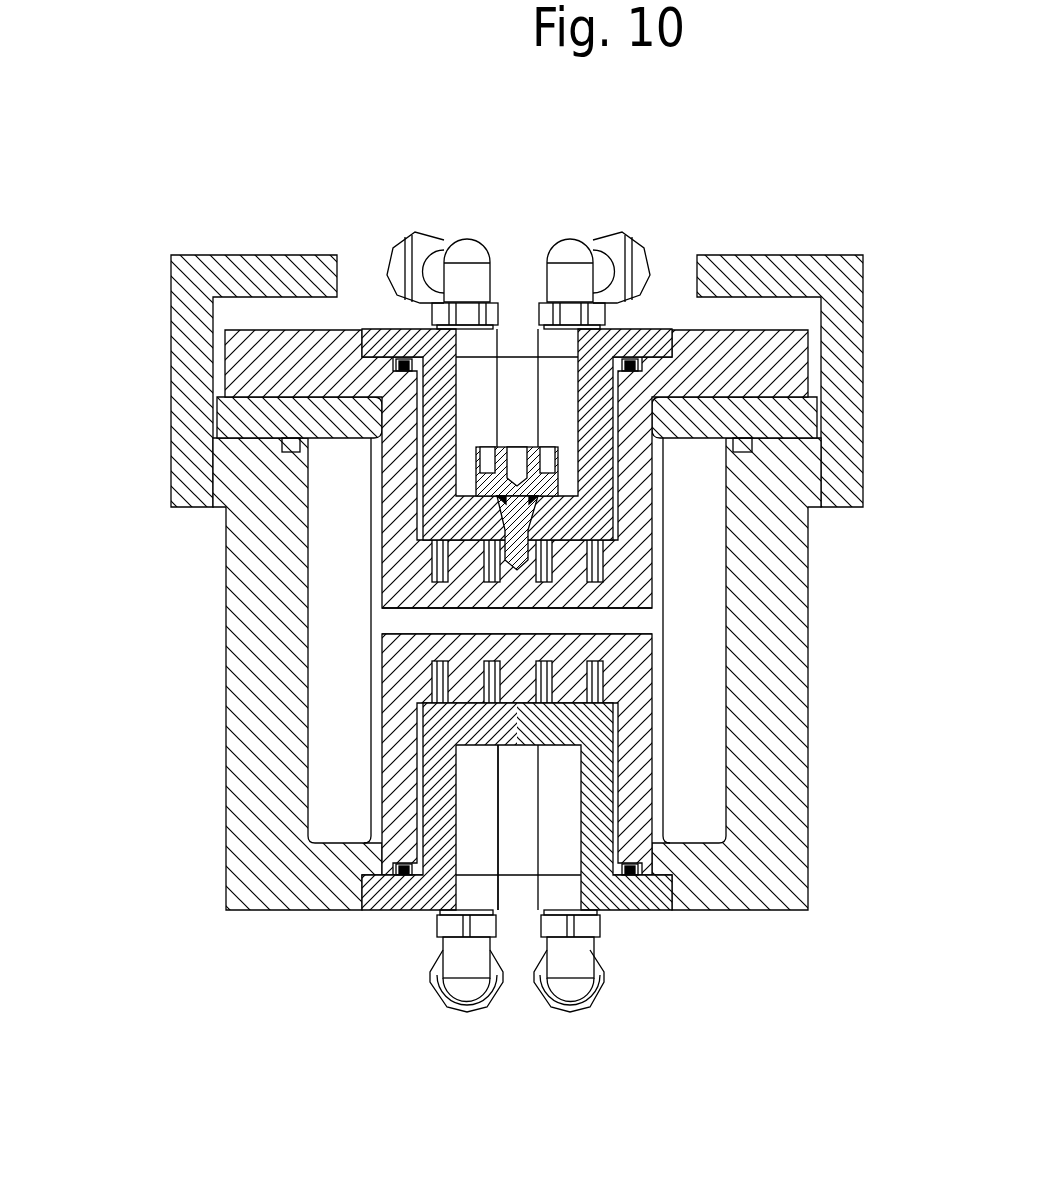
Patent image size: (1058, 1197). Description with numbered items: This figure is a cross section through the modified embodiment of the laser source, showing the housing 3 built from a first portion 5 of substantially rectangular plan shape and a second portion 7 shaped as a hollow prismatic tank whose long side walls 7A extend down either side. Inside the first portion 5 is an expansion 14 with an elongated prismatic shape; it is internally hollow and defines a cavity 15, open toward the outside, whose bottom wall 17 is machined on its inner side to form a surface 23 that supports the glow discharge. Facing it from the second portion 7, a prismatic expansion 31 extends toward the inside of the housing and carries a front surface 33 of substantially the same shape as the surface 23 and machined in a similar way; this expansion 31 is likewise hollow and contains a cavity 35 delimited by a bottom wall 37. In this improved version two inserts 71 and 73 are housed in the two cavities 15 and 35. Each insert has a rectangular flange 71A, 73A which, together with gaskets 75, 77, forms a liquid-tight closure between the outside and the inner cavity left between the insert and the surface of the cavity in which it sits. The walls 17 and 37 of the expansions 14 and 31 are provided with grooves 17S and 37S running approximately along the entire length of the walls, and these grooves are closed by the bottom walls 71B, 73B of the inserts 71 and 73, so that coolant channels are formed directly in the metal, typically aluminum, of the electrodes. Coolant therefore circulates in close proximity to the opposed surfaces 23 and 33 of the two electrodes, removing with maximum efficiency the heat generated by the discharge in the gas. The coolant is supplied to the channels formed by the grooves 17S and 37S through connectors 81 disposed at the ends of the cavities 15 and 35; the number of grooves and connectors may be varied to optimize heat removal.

The housing 3 is at (474, 623).
The first portion 5 is at (795, 320).
The second portion 7 is at (508, 674).
The long side walls 7A is at (858, 648).
The expansion 14 is at (516, 602).
The cavity 15 is at (516, 316).
The bottom wall 17 is at (516, 475).
The grooves 17S is at (600, 567).
The surface 23 is at (388, 616).
The expansion 31 is at (516, 752).
The front surface 33 is at (395, 623).
The cavity 35 is at (516, 880).
The bottom wall 37 is at (548, 752).
The grooves 37S is at (600, 684).
The insert 71 is at (523, 388).
The rectangular flange 71A is at (644, 338).
The bottom wall 71B is at (524, 482).
The insert 73 is at (517, 877).
The rectangular flange 73A is at (640, 907).
The bottom wall 73B is at (480, 747).
The gasket 75 is at (638, 364).
The gasket 77 is at (420, 877).
The connectors 81 is at (472, 252).